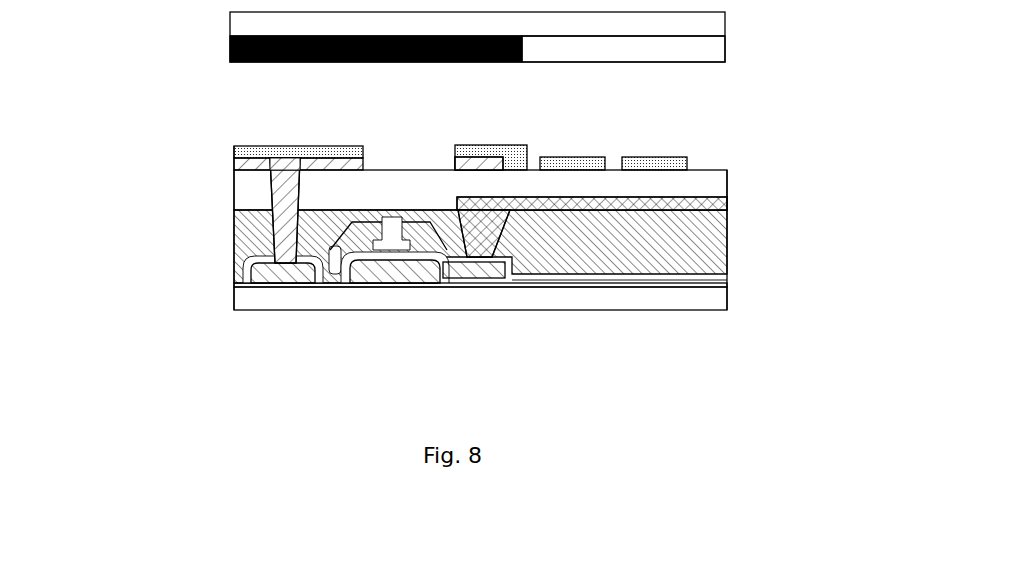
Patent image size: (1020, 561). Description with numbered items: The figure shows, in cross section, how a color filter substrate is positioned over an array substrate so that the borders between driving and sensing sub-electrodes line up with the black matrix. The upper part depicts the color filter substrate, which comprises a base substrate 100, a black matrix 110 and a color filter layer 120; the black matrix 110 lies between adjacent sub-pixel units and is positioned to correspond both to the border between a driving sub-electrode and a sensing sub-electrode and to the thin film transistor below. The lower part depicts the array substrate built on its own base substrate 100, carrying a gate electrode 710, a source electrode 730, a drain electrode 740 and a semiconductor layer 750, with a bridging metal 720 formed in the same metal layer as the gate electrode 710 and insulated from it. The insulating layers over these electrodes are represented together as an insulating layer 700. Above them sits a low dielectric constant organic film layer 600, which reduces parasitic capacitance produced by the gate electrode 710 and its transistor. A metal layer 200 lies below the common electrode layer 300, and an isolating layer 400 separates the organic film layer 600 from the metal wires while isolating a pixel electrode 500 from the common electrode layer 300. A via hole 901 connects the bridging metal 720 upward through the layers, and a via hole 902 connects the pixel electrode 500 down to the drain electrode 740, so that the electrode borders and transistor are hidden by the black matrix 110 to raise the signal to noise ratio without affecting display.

The base substrate 100 is at (237, 21).
The black matrix 110 is at (355, 65).
The color filter layer 120 is at (628, 65).
The metal layer 200 is at (234, 160).
The common electrode layer 300 is at (668, 167).
The isolating layer 400 is at (234, 202).
The pixel electrode 500 is at (727, 206).
The organic film layer 600 is at (234, 253).
The insulating layer 700 is at (727, 282).
The gate electrode 710 is at (376, 276).
The bridging metal 720 is at (280, 273).
The source electrode 730 is at (372, 234).
The drain electrode 740 is at (475, 272).
The semiconductor layer 750 is at (409, 248).
The via hole 901 is at (286, 226).
The via hole 902 is at (488, 222).